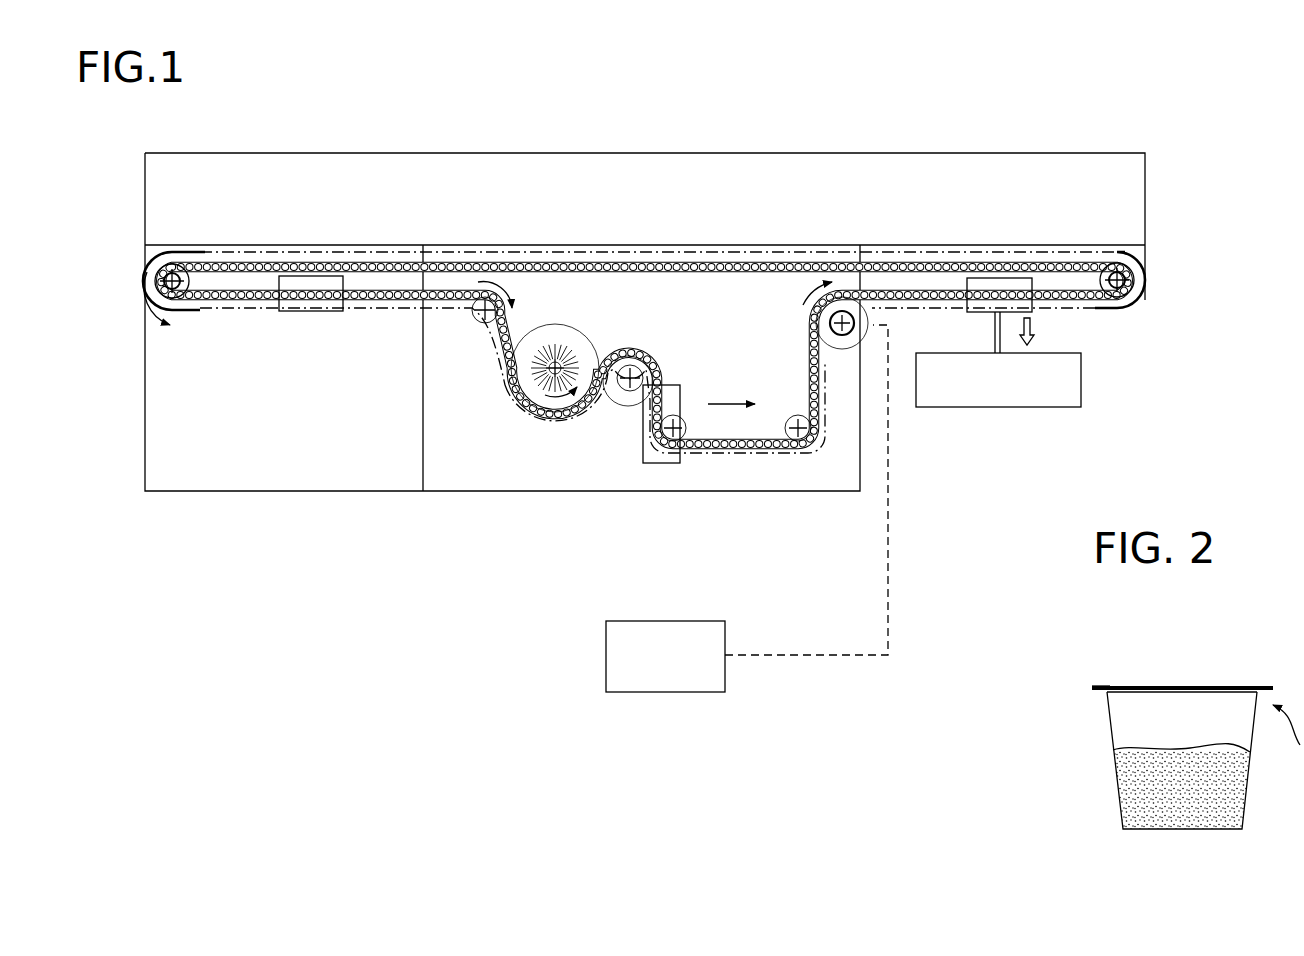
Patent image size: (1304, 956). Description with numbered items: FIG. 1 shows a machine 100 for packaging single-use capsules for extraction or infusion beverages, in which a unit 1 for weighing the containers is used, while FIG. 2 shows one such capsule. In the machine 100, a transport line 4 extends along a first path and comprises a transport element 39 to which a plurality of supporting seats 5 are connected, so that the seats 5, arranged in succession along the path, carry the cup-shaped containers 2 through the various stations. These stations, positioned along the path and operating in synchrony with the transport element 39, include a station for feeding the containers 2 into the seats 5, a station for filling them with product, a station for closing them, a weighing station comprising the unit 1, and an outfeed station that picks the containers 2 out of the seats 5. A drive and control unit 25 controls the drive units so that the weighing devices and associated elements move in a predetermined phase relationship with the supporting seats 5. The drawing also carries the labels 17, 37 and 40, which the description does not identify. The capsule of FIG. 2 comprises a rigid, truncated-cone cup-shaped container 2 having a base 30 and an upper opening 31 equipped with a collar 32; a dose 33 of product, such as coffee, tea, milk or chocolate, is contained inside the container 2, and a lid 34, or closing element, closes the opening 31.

In FIG. 1, the weighing unit 1 is at (879, 312).
In FIG. 2, the cup-shaped container 2 is at (1144, 733).
In FIG. 1, the transport line 4 is at (244, 306).
In FIG. 1, the supporting seats 5 is at (373, 265).
In FIG. 1, the roller 17 is at (180, 276).
In FIG. 1, the drive and control unit 25 is at (747, 508).
In FIG. 2, the base 30 is at (1192, 830).
In FIG. 2, the upper opening 31 is at (1229, 679).
In FIG. 2, the collar 32 is at (1090, 692).
In FIG. 2, the dose of product 33 is at (1133, 770).
In FIG. 2, the lid 34 is at (1107, 688).
In FIG. 1, the brush roller 37 is at (543, 415).
In FIG. 1, the transport element 39 is at (174, 288).
In FIG. 1, the sensor unit 40 is at (941, 261).
In FIG. 1, the packaging machine 100 is at (224, 522).